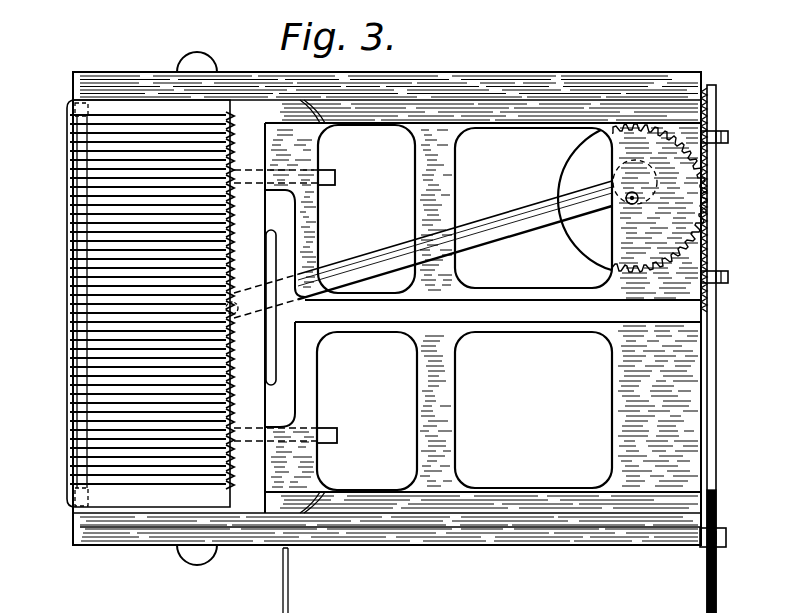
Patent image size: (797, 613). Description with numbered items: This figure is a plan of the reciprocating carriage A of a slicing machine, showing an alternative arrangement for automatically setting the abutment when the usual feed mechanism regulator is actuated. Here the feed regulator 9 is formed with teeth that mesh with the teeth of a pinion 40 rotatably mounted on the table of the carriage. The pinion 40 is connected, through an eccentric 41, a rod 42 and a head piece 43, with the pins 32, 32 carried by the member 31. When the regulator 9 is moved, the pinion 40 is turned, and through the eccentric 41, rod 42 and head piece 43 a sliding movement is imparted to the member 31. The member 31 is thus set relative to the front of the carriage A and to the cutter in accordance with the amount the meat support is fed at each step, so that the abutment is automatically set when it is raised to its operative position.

The reciprocating carriage A is at (405, 75).
The feed regulator 9 is at (712, 405).
The member 31 is at (66, 243).
The pins 32 is at (337, 177).
The pinion 40 is at (672, 220).
The eccentric 41 is at (624, 188).
The rod 42 is at (471, 224).
The head piece 43 is at (232, 238).